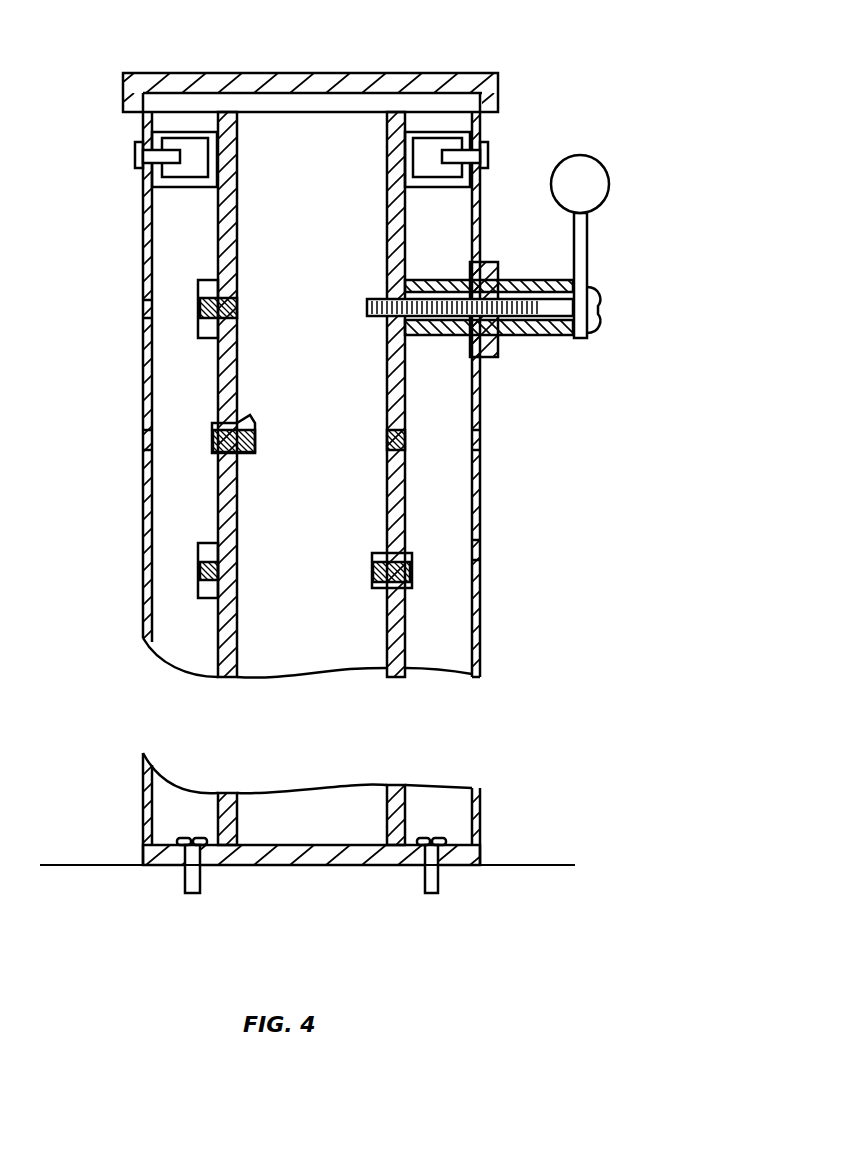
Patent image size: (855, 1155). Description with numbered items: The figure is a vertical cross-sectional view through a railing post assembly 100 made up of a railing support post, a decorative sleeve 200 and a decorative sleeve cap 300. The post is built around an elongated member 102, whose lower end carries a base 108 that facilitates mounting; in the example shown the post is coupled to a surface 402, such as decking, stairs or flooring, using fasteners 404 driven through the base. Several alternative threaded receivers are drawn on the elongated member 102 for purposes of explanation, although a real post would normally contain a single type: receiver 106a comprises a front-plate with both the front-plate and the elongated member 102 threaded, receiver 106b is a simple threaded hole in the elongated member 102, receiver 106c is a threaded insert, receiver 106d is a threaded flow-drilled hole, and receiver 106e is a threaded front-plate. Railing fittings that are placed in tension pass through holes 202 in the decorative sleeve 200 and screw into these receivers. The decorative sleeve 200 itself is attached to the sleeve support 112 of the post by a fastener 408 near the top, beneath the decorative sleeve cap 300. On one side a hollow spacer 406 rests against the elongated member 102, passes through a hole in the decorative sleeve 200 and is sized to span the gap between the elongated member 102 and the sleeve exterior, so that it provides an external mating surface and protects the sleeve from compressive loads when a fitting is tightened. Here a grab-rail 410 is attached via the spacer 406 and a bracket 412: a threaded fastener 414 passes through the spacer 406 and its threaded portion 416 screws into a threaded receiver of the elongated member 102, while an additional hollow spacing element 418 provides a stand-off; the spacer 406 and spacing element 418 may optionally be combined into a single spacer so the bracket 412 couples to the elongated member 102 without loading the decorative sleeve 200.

The assembly 100 is at (218, 686).
The elongated member 102 is at (330, 110).
The receiver 106a is at (240, 305).
The receiver 106b is at (390, 262).
The receiver 106c is at (372, 573).
The receiver 106d is at (255, 460).
The receiver 106e is at (198, 552).
The base 108 is at (310, 865).
The sleeve support 112 is at (183, 135).
The decorative sleeve 200 is at (143, 252).
The holes 202 is at (143, 309).
The decorative sleeve cap 300 is at (141, 73).
The surface 402 is at (545, 865).
The fasteners 404 is at (192, 895).
The hollow spacer 406 is at (498, 348).
The fastener 408 is at (135, 155).
The grab-rail 410 is at (607, 185).
The bracket 412 is at (587, 245).
The threaded fastener 414 is at (593, 331).
The threaded portion 416 is at (372, 308).
The hollow spacing element 418 is at (560, 335).